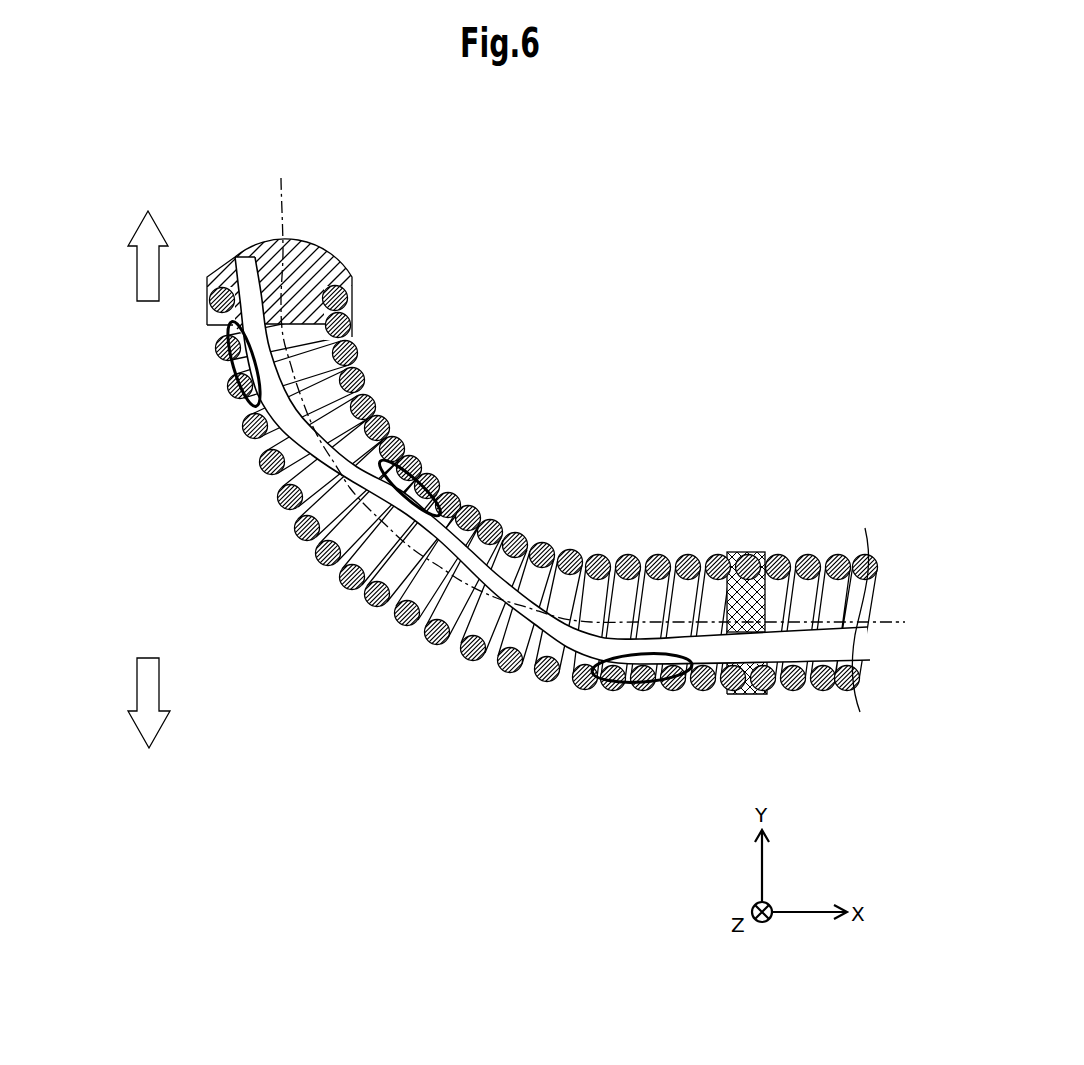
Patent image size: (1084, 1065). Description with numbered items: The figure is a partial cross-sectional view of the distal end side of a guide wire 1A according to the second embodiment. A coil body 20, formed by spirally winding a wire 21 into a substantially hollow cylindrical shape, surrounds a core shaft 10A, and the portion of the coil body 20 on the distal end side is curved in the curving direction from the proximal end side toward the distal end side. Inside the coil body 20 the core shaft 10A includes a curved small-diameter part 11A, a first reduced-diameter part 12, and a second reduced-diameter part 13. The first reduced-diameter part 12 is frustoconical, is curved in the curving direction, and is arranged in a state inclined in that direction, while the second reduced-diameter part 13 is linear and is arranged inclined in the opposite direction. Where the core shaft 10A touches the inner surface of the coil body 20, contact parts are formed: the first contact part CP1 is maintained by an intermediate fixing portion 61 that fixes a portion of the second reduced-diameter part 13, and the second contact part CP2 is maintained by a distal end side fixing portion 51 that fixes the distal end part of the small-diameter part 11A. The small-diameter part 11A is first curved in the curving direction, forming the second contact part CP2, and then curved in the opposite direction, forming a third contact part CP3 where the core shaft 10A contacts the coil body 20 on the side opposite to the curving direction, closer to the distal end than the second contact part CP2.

The guide wire 1A is at (733, 244).
The core shaft 10A is at (593, 622).
The small-diameter part 11A is at (292, 420).
The first reduced-diameter part 12 is at (533, 640).
The second reduced-diameter part 13 is at (790, 652).
The coil body 20 is at (779, 540).
The wire 21 is at (837, 553).
The distal end side fixing portion 51 is at (323, 255).
The intermediate fixing portion 61 is at (740, 552).
The first contact part CP1 is at (636, 684).
The second contact part CP2 is at (440, 493).
The third contact part CP3 is at (232, 368).